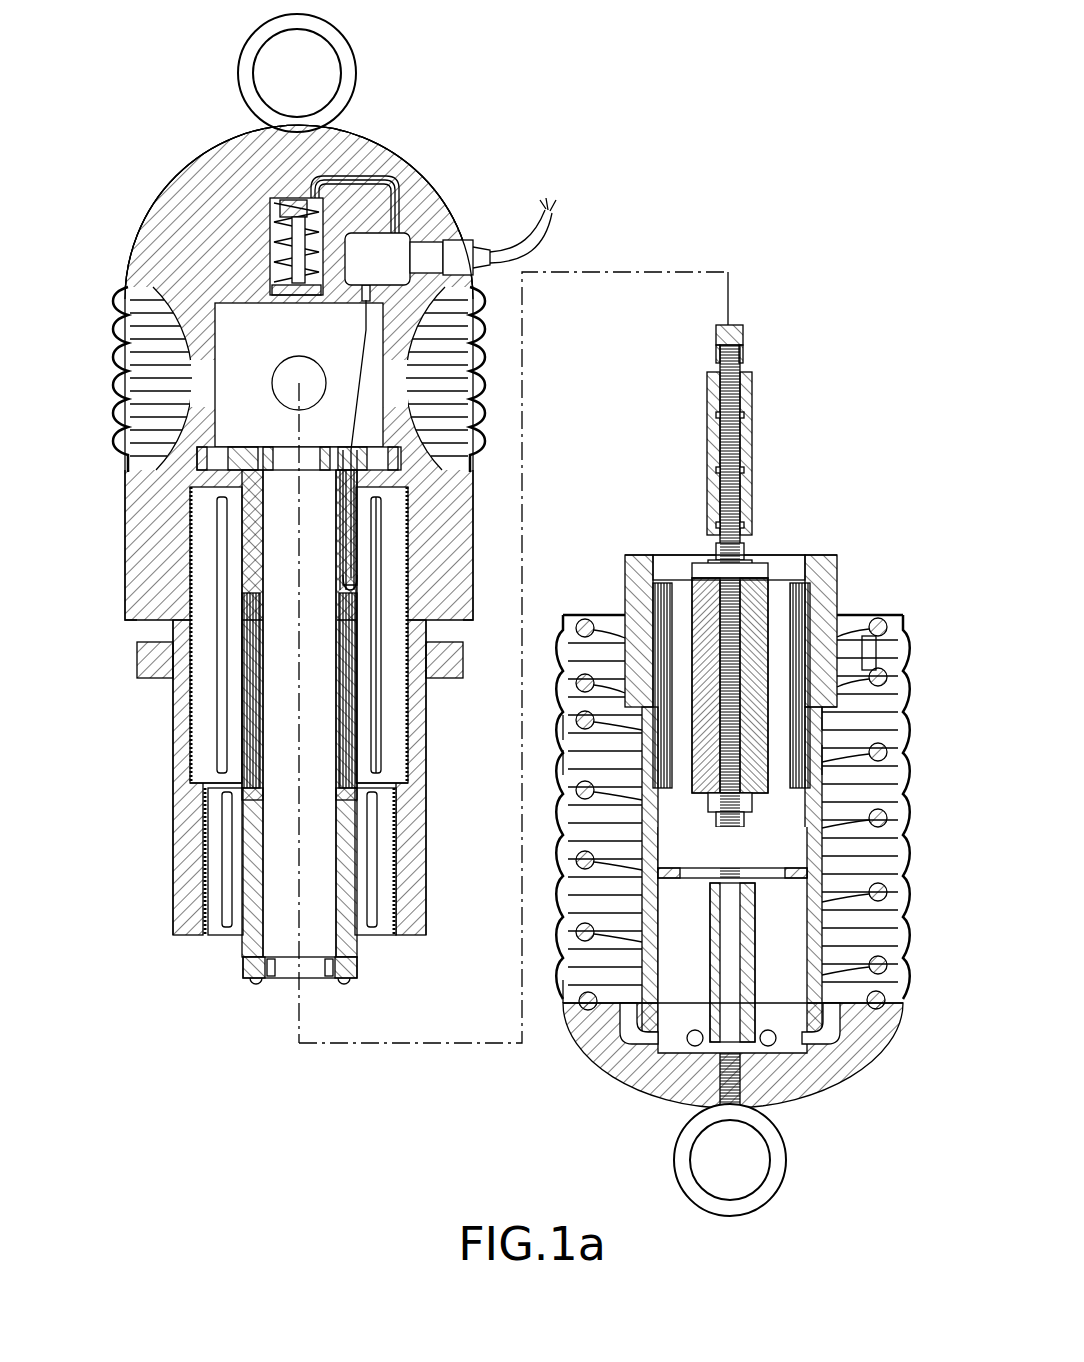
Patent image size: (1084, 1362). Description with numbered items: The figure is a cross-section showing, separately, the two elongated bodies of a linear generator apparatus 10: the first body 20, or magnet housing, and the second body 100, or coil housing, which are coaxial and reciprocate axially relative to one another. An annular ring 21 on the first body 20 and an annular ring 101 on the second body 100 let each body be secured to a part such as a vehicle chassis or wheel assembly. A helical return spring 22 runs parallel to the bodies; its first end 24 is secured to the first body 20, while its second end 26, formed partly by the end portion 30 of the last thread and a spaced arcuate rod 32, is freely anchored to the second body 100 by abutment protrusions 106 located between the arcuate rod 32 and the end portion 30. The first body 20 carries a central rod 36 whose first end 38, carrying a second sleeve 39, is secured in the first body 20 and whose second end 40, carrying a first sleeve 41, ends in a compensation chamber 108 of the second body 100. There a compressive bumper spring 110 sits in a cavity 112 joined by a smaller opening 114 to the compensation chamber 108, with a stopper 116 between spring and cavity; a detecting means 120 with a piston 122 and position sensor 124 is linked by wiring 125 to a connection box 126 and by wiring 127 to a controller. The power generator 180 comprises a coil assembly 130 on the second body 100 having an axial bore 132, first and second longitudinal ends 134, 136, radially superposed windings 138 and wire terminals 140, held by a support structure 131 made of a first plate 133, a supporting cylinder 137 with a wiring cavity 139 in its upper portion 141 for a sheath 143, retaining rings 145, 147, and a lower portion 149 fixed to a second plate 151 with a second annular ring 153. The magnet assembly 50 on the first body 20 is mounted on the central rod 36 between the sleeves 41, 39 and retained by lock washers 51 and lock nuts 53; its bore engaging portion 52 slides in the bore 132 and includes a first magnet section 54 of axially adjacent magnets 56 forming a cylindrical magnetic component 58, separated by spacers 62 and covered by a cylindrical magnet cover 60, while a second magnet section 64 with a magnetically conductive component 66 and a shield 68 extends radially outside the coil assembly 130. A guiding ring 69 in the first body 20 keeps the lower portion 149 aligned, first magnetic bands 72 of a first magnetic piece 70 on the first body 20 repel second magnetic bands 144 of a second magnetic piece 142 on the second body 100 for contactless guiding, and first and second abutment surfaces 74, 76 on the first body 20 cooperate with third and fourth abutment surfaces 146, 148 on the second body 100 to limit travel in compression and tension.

The linear generator apparatus 10 is at (791, 115).
The first body 20 is at (806, 523).
The annular ring 21 is at (786, 1160).
The helical return spring 22 is at (555, 790).
The first longitudinal end 24 is at (577, 1013).
The second longitudinal end 26 is at (550, 728).
The end portion of a last thread 30 is at (548, 690).
The arcuate rod 32 is at (623, 618).
The central rod 36 is at (700, 872).
The first end of the rod 38 is at (707, 1083).
The second sleeve 39 is at (757, 1007).
The second end of the rod 40 is at (717, 350).
The first sleeve 41 is at (752, 397).
The magnet assembly 50 is at (765, 655).
The lock washers 51 is at (695, 578).
The bore engaging portion 52 is at (838, 665).
The clamping and lock nuts 53 is at (713, 555).
The first magnet section 54 is at (823, 722).
The magnets 56 is at (823, 750).
The cylindrical magnetic component 58 is at (790, 640).
The cylindrical magnet cover 60 is at (582, 640).
The spacers 62 is at (655, 600).
The second magnet section 64 is at (823, 705).
The magnetically conductive component 66 is at (822, 765).
The shield 68 is at (623, 607).
The guiding ring 69 is at (565, 1000).
The first magnetic piece 70 is at (628, 597).
The first magnetic bands 72 is at (837, 557).
The first abutment surface 74 is at (818, 552).
The second abutment surface 76 is at (570, 762).
The second body 100 is at (407, 124).
The annular ring 101 is at (343, 36).
The abutment protrusions 106 is at (140, 660).
The compensation chamber 108 is at (338, 367).
The compressive spring 110 is at (278, 210).
The cavity 112 is at (273, 256).
The opening 114 is at (292, 313).
The stopper 116 is at (300, 293).
The detecting means 120 is at (296, 215).
The piston 122 is at (273, 275).
The position sensor 124 is at (273, 228).
The wiring 125 is at (380, 172).
The connection box 126 is at (398, 240).
The wiring 127 is at (548, 205).
The coil assembly 130 is at (245, 762).
The support structure 131 is at (281, 1006).
The bore 132 is at (265, 705).
The first plate 133 is at (243, 446).
The first longitudinal end 134 is at (253, 778).
The second longitudinal end 136 is at (245, 600).
The supporting cylinder 137 is at (247, 502).
The windings 138 is at (245, 735).
The wiring cavity 139 is at (350, 520).
The wire terminal 140 is at (345, 578).
The upper portion 141 is at (352, 548).
The second magnetic piece 142 is at (190, 568).
The sheath 143 is at (355, 425).
The second magnetic bands 144 is at (190, 548).
The retaining ring 145 is at (240, 583).
The third abutment surface 146 is at (385, 490).
The retaining ring 147 is at (173, 836).
The fourth abutment surface 148 is at (372, 752).
The lower portion 149 is at (243, 950).
The second plate 151 is at (252, 982).
The second annular ring 153 is at (328, 980).
The power generator 180 is at (366, 710).